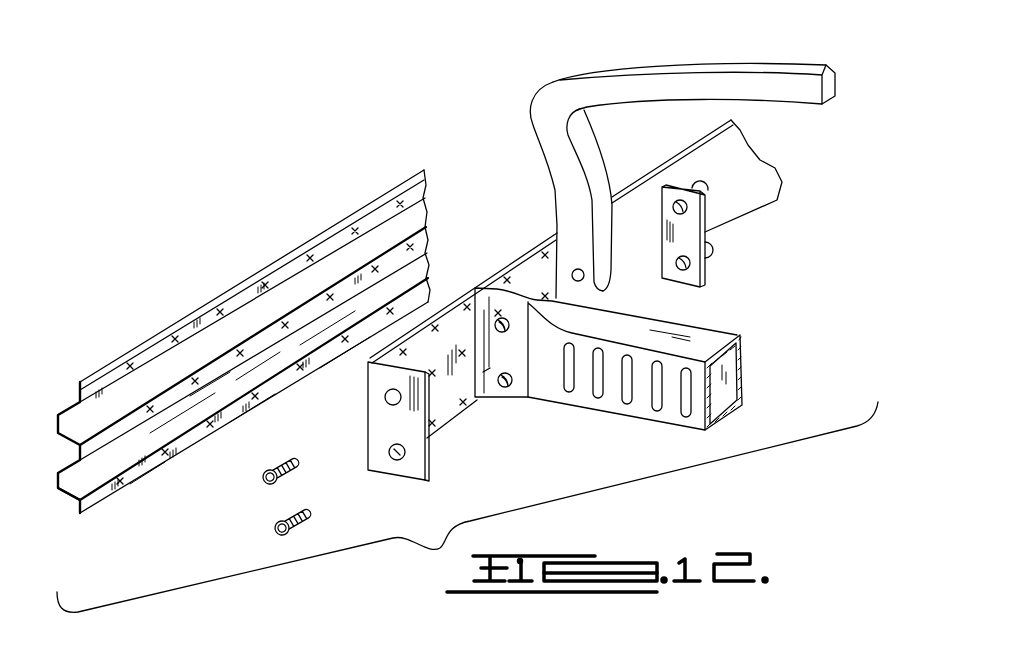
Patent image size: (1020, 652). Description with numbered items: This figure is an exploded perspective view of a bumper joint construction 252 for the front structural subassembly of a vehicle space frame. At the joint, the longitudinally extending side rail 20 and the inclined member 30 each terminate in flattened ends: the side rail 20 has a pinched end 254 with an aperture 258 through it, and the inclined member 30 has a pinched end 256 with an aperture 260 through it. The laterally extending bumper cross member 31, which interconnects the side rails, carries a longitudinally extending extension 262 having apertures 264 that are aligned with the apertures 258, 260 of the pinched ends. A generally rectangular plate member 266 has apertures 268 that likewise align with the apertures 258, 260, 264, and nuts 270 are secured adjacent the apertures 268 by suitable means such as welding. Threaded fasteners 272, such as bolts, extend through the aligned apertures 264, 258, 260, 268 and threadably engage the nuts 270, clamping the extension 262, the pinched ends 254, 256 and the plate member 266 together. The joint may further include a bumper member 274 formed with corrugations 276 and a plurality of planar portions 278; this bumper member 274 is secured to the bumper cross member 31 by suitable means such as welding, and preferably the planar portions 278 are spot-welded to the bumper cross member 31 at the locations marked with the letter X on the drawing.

The bumper joint construction 252 is at (443, 103).
The inclined member 30 is at (638, 65).
The bumper member 274 is at (63, 400).
The apertures 268 is at (688, 211).
The bumper cross member 31 is at (523, 280).
The pinched end 256 is at (606, 290).
The nuts 270 is at (713, 257).
The plate member 266 is at (693, 275).
The aperture 260 is at (579, 282).
The side rail 20 is at (710, 335).
The planar portions 278 is at (193, 322).
The corrugations 276 is at (58, 473).
The threaded fasteners 272 is at (270, 534).
The extension 262 is at (380, 423).
The apertures 264 is at (396, 460).
The pinched end 254 is at (487, 372).
The aperture 258 is at (508, 388).